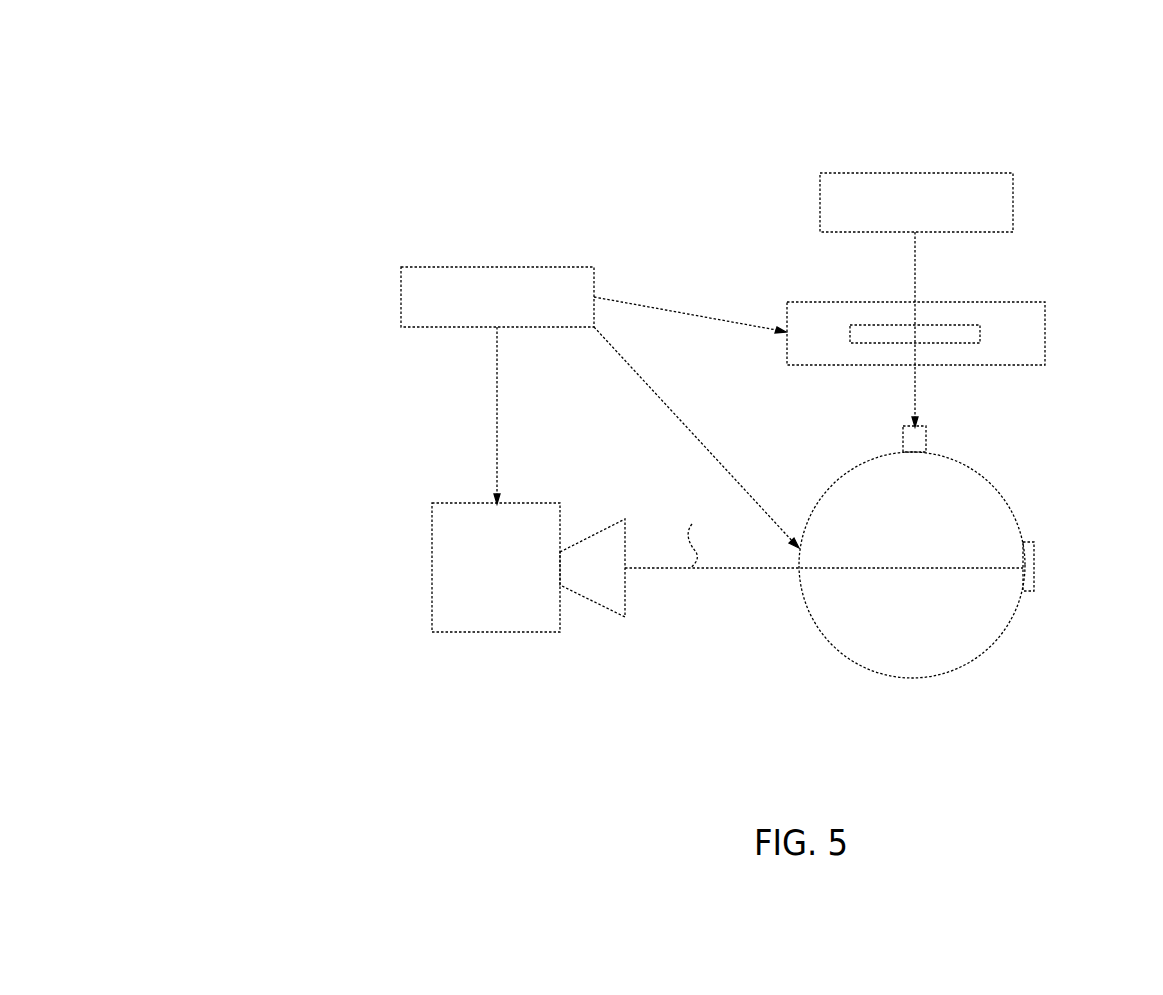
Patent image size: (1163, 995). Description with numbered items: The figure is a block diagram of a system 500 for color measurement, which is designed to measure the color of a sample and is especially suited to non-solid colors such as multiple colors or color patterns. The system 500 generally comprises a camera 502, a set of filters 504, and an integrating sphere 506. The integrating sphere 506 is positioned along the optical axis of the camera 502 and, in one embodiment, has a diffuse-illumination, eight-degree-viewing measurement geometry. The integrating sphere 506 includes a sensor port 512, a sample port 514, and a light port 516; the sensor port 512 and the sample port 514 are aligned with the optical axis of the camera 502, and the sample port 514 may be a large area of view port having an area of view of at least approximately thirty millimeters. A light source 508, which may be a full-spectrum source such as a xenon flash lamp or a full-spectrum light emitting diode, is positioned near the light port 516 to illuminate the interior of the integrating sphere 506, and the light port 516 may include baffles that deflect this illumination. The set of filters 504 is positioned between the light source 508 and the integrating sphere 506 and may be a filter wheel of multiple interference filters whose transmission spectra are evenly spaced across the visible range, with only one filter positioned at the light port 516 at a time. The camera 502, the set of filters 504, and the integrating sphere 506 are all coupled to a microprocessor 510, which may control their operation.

The system for color measurement 500 is at (647, 364).
The camera 502 is at (528, 567).
The set of filters 504 is at (1045, 331).
The integrating sphere 506 is at (978, 656).
The light source 508 is at (916, 202).
The microprocessor 510 is at (497, 297).
The sensor port 512 is at (799, 581).
The sample port 514 is at (1035, 543).
The light port 516 is at (903, 450).